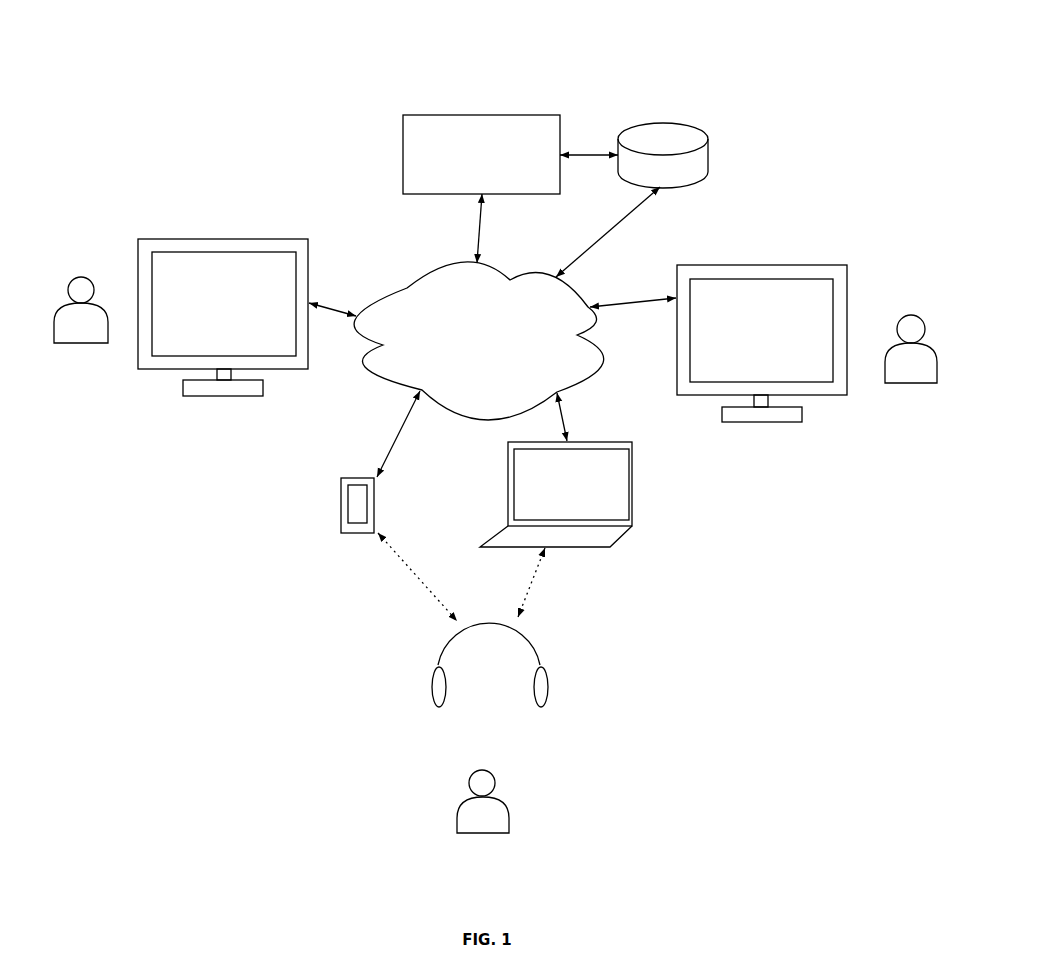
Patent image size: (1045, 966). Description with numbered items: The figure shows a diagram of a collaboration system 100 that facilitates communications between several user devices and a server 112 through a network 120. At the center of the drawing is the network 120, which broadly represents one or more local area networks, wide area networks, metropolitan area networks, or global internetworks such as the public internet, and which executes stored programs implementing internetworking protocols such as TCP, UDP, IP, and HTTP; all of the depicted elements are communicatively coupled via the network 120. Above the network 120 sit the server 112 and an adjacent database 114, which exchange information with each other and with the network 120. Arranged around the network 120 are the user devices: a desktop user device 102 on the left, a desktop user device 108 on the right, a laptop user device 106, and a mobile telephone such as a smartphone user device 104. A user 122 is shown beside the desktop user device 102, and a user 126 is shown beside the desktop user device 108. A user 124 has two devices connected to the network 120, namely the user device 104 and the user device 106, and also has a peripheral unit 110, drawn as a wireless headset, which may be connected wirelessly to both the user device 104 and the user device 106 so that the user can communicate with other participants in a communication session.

The collaboration system 100 is at (250, 53).
The user device 102 is at (168, 238).
The user device 104 is at (357, 475).
The user device 106 is at (635, 465).
The user device 108 is at (822, 263).
The peripheral unit 110 is at (533, 645).
The server 112 is at (538, 113).
The database 114 is at (698, 123).
The network 120 is at (408, 282).
The user 122 is at (53, 315).
The user 124 is at (510, 828).
The user 126 is at (933, 355).